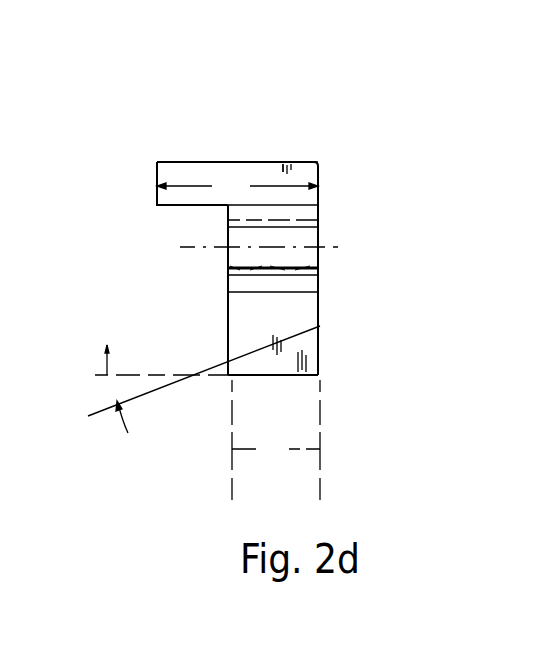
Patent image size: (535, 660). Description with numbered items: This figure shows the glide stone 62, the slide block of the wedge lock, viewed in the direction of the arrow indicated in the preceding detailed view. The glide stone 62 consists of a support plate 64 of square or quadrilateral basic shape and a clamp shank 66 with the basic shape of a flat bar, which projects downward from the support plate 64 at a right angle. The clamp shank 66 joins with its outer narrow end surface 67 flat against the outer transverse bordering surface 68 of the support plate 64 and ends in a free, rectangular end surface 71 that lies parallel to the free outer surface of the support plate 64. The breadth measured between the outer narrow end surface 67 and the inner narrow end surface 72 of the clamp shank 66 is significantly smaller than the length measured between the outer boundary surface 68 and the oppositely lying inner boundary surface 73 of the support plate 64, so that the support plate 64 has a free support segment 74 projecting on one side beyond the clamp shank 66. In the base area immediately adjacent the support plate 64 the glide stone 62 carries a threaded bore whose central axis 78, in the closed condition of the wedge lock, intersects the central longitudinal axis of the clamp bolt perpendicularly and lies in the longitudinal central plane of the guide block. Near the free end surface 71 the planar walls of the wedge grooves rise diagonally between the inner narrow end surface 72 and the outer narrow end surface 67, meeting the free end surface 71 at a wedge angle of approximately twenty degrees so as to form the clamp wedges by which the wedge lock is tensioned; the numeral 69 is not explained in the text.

The glide stone 62 is at (293, 162).
The support plate 64 is at (216, 172).
The clamp shank 66 is at (322, 283).
The outer narrow end surface 67 is at (320, 207).
The outer transverse bordering surface 68 is at (325, 183).
The contact surface 69 is at (259, 153).
The free end surface 71 is at (272, 376).
The inner narrow end surface 72 is at (228, 282).
The inner boundary surface 73 is at (157, 184).
The free support segment 74 is at (181, 173).
The central axis 78 is at (190, 246).